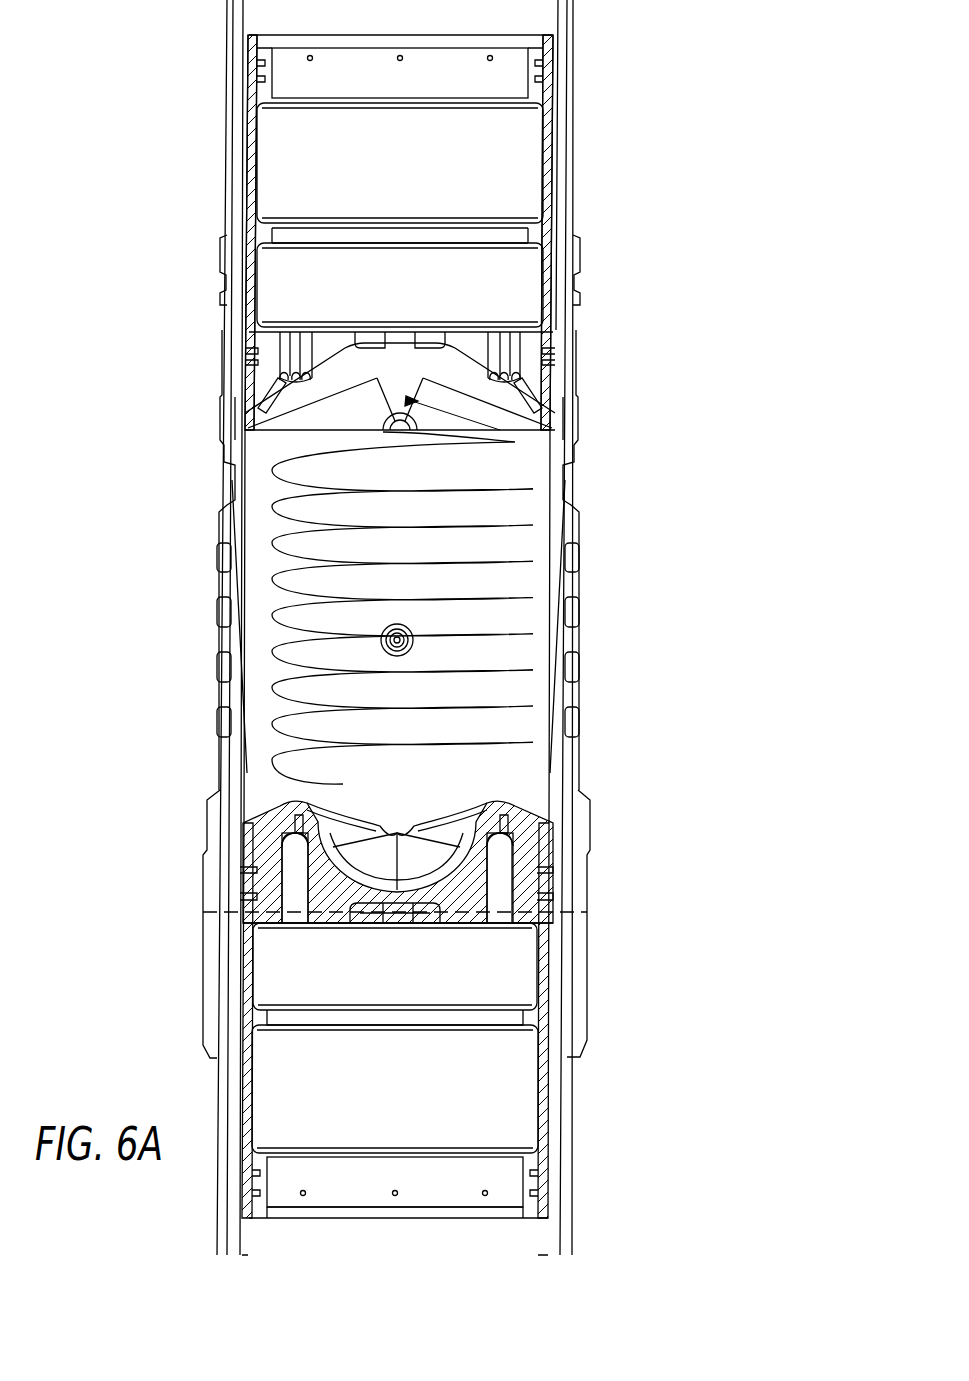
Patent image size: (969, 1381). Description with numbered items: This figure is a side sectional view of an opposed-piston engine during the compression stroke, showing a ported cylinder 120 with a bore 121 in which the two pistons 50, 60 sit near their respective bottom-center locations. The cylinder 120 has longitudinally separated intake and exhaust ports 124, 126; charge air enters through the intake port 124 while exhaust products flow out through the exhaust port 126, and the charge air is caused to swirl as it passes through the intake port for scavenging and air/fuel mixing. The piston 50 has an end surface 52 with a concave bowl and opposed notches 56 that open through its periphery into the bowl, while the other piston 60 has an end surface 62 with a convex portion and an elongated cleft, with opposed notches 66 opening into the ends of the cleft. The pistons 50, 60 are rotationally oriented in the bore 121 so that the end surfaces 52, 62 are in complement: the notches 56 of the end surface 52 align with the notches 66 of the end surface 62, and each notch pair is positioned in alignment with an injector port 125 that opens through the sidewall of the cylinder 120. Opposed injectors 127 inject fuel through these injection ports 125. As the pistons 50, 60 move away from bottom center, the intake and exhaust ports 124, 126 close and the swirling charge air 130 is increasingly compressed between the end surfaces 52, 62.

The piston 50 is at (533, 237).
The exhaust port 126 is at (594, 352).
The end surface 52 is at (276, 446).
The notches 56 is at (397, 420).
The cylinder 120 is at (614, 530).
The injectors 127 is at (407, 630).
The bore 121 is at (539, 662).
The injector port 125 is at (410, 650).
The swirling charge air 130 is at (507, 710).
The notches 66 is at (396, 833).
The end surface 62 is at (512, 786).
The intake port 124 is at (600, 940).
The piston 60 is at (548, 1106).